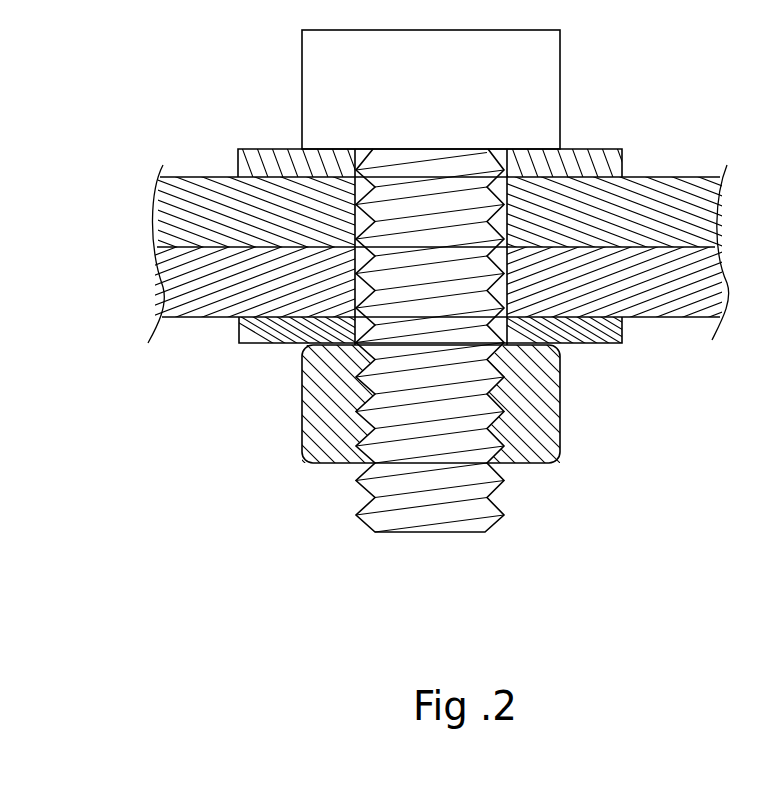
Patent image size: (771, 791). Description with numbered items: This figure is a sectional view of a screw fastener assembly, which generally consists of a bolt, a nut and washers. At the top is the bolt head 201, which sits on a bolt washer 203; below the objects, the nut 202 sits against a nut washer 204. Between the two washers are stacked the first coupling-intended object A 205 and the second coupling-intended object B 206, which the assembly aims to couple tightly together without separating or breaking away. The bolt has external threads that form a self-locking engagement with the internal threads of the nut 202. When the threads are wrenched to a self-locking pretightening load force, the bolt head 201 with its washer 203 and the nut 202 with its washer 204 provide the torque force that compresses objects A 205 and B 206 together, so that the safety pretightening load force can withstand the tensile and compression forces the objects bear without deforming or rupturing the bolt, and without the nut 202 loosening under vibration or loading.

The bolt head 201 is at (530, 85).
The nut 202 is at (518, 414).
The bolt washer 203 is at (593, 162).
The nut washer 204 is at (238, 335).
The first coupling-intended object A 205 is at (190, 207).
The second coupling-intended object B 206 is at (197, 285).